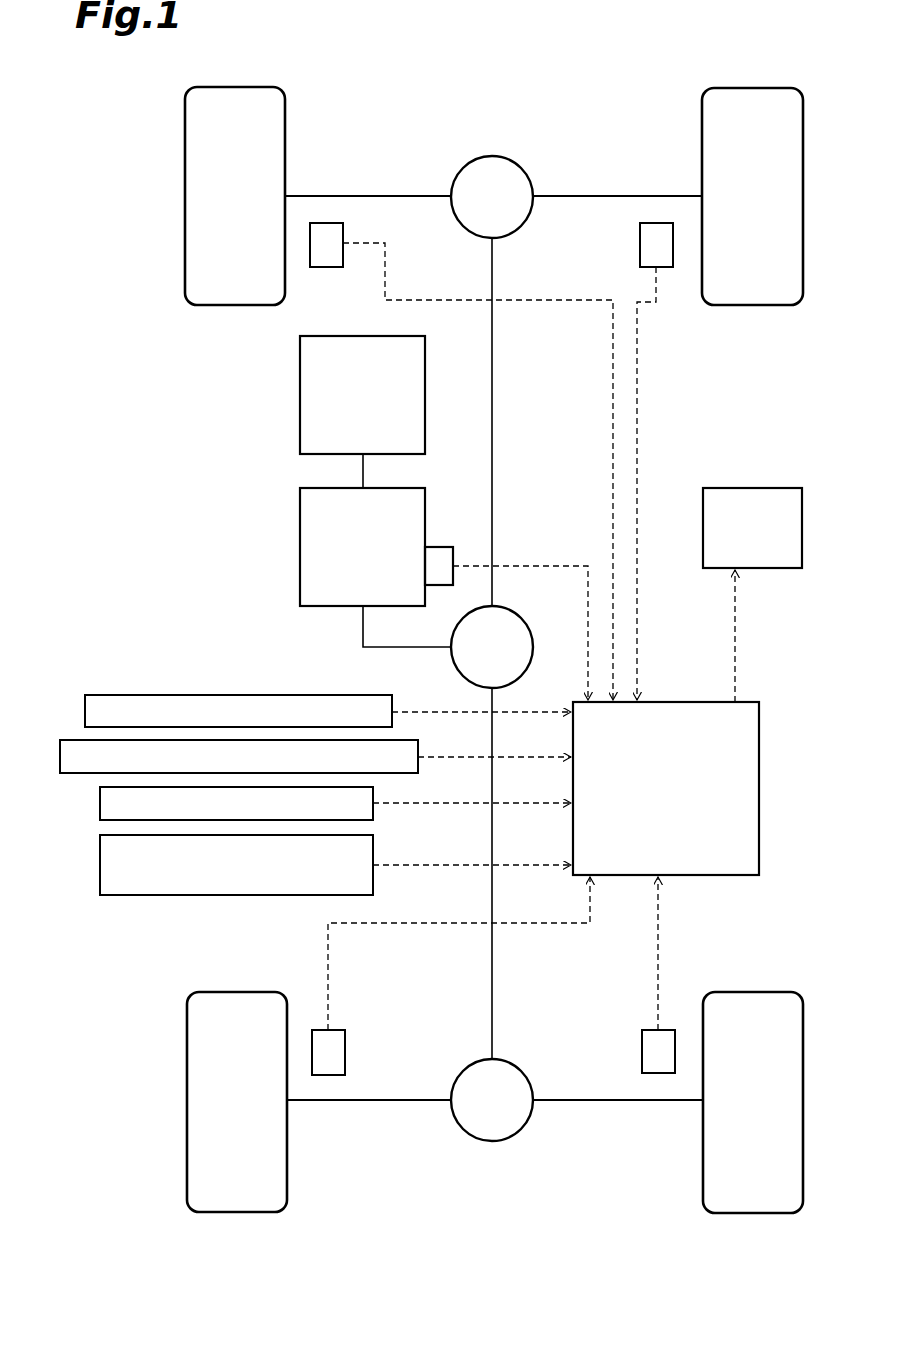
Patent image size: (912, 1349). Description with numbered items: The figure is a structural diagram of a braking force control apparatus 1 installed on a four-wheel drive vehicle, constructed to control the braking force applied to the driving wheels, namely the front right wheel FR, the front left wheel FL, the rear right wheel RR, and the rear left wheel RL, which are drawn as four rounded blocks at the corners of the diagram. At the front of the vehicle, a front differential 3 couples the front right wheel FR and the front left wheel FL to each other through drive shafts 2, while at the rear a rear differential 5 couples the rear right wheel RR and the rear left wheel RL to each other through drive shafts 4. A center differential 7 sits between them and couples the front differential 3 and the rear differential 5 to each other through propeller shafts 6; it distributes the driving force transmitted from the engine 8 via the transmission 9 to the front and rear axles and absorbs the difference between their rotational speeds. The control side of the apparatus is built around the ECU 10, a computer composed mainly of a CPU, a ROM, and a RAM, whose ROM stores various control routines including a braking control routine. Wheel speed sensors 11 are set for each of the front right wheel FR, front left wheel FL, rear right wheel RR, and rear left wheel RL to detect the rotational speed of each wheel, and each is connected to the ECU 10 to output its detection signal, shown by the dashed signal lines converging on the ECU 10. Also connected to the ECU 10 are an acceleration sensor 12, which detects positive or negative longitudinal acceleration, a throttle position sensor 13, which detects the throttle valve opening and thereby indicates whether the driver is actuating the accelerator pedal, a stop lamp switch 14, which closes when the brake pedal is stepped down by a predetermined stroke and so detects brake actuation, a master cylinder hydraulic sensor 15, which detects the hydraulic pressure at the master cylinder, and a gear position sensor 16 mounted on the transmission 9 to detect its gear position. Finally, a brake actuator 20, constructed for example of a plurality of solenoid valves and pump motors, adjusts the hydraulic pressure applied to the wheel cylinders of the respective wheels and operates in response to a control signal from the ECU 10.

The braking force control apparatus 1 is at (806, 78).
The drive shafts 2 is at (364, 196).
The front differential 3 is at (490, 156).
The drive shafts 4 is at (372, 1102).
The rear differential 5 is at (490, 1141).
The propeller shafts 6 is at (493, 425).
The center differential 7 is at (456, 670).
The engine 8 is at (300, 400).
The transmission 9 is at (300, 552).
The ECU 10 is at (759, 770).
The wheel speed sensors 11 is at (326, 267).
The acceleration sensor 12 is at (85, 711).
The throttle position sensor 13 is at (60, 757).
The stop lamp switch 14 is at (100, 802).
The master cylinder hydraulic sensor 15 is at (100, 865).
The gear position sensor 16 is at (446, 548).
The brake actuator 20 is at (748, 488).
The front left wheel FL is at (231, 87).
The front right wheel FR is at (754, 88).
The rear left wheel RL is at (233, 992).
The rear right wheel RR is at (748, 992).